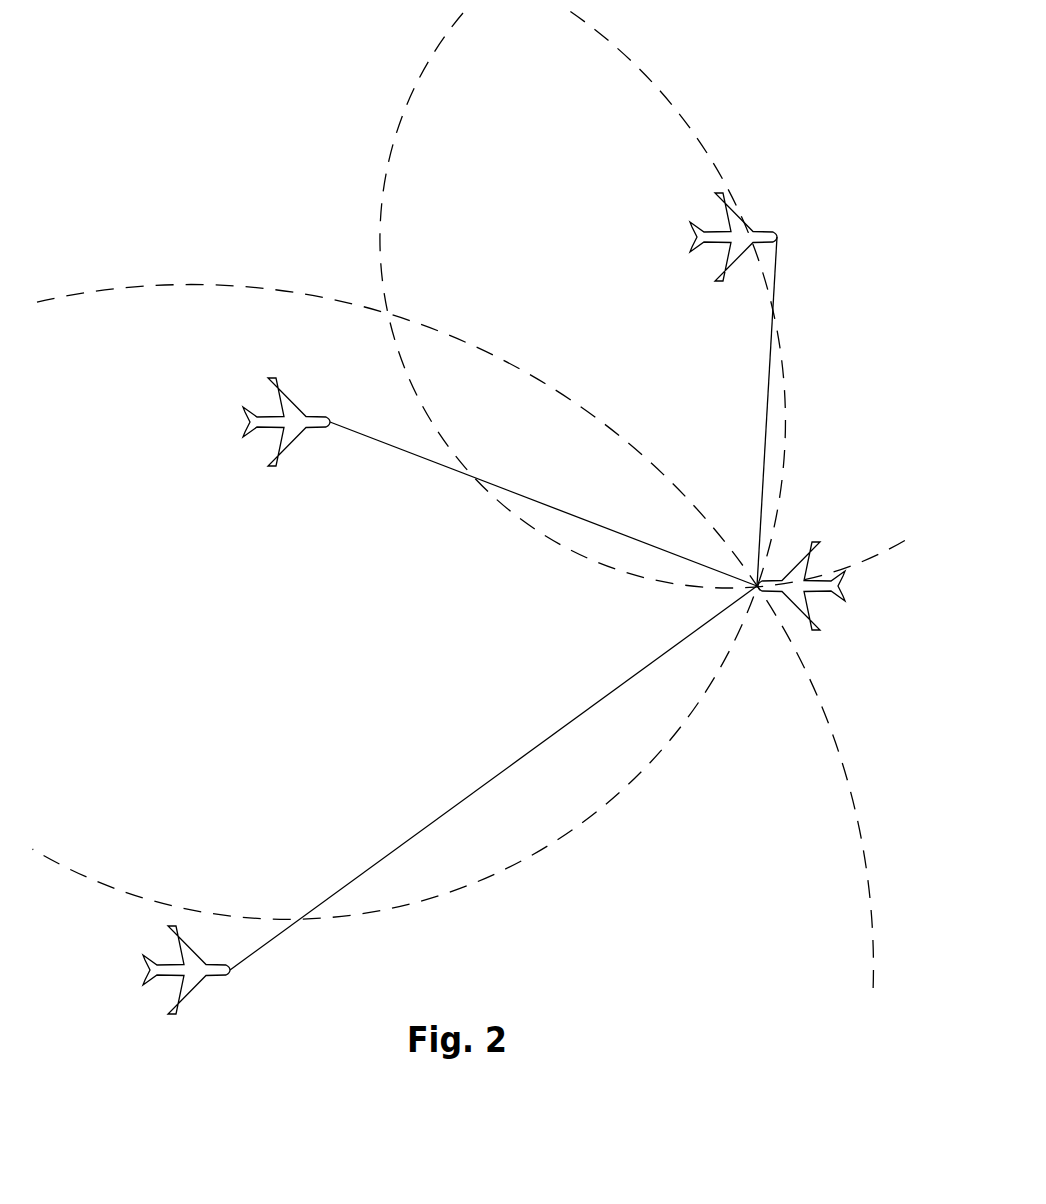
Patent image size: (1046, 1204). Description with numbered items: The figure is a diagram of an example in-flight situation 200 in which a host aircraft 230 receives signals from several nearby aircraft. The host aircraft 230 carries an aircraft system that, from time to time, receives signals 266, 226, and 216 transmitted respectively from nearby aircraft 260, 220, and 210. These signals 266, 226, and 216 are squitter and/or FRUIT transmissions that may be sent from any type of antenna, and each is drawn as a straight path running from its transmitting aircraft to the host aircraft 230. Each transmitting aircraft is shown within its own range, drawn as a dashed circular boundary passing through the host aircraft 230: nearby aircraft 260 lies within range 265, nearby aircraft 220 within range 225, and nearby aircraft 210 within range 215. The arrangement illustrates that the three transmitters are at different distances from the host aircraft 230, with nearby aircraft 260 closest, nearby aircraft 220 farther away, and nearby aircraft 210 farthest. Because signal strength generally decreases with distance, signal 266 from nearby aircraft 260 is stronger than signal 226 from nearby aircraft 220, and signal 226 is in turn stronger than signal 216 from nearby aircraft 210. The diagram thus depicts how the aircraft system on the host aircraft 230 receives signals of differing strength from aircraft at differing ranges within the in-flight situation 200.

The in-flight situation 200 is at (165, 73).
The nearby aircraft 210 is at (205, 978).
The range 215 is at (187, 287).
The signal 216 is at (503, 770).
The nearby aircraft 220 is at (297, 403).
The range 225 is at (655, 88).
The signal 226 is at (437, 463).
The host aircraft 230 is at (813, 557).
The nearby aircraft 260 is at (720, 280).
The range 265 is at (382, 243).
The signal 266 is at (767, 412).